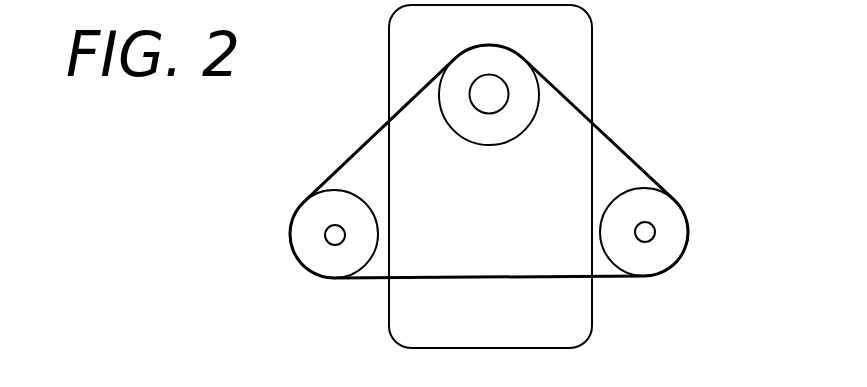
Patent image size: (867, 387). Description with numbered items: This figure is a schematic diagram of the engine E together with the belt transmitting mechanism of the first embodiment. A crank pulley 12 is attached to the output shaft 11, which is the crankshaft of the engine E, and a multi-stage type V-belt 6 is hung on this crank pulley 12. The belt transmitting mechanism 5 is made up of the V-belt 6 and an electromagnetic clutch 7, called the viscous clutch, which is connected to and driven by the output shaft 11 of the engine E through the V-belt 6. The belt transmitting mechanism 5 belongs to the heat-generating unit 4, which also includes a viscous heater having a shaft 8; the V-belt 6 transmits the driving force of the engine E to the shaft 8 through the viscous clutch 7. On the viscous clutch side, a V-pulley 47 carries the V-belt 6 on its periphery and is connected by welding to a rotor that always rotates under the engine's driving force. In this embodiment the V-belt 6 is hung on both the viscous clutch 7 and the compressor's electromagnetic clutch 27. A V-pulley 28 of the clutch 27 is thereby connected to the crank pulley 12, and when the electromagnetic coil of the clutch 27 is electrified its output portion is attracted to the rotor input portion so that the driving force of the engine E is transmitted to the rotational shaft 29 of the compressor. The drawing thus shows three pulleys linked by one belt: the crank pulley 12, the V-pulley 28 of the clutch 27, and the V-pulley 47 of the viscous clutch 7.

The engine E is at (592, 37).
The heat-generating unit 4 is at (709, 81).
The belt transmitting mechanism 5 is at (680, 113).
The V-belt 6 is at (633, 157).
The electromagnetic clutch (viscous clutch) 7 is at (683, 205).
The shaft 8 is at (655, 232).
The output shaft 11 is at (480, 89).
The crank pulley 12 is at (468, 58).
The electromagnetic clutch 27 is at (312, 275).
The V-pulley 28 is at (307, 230).
The rotational shaft 29 is at (326, 238).
The V-pulley 47 is at (635, 262).